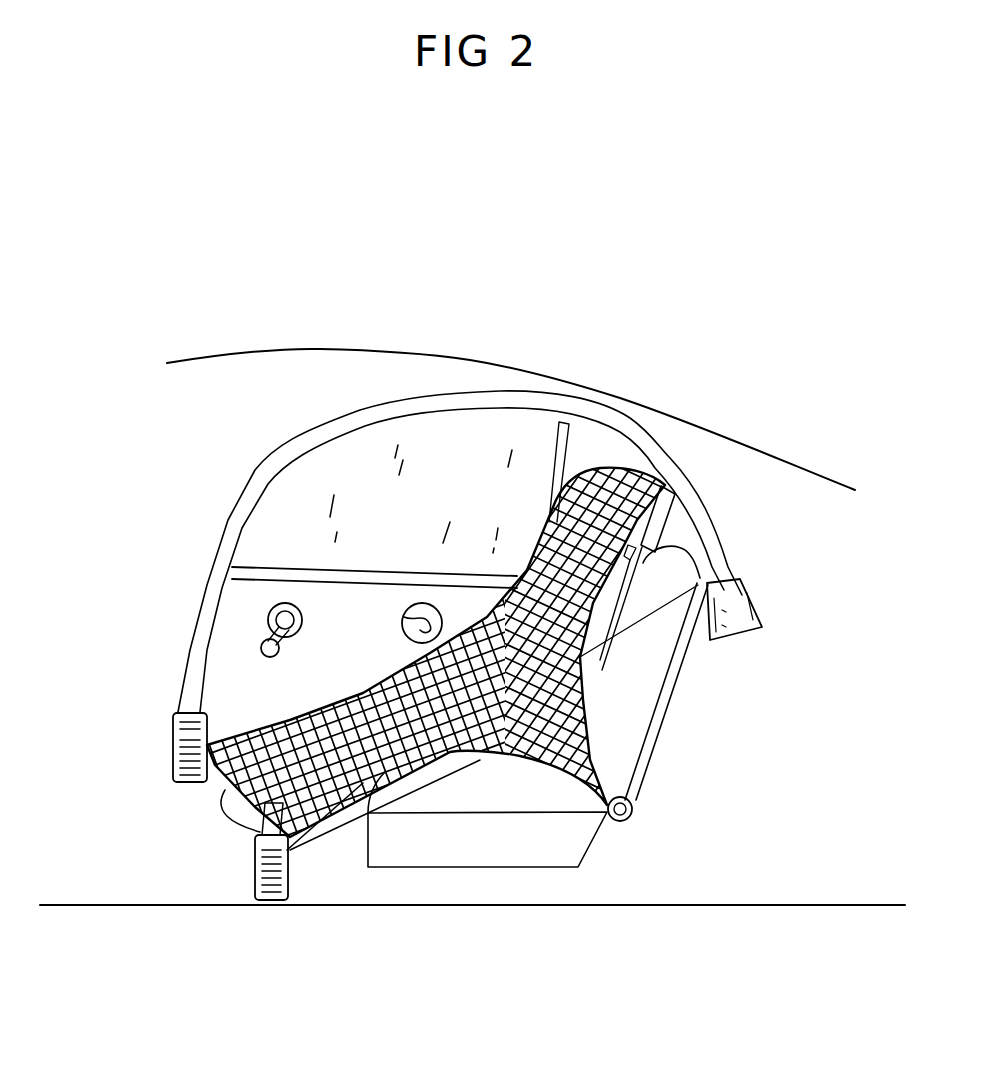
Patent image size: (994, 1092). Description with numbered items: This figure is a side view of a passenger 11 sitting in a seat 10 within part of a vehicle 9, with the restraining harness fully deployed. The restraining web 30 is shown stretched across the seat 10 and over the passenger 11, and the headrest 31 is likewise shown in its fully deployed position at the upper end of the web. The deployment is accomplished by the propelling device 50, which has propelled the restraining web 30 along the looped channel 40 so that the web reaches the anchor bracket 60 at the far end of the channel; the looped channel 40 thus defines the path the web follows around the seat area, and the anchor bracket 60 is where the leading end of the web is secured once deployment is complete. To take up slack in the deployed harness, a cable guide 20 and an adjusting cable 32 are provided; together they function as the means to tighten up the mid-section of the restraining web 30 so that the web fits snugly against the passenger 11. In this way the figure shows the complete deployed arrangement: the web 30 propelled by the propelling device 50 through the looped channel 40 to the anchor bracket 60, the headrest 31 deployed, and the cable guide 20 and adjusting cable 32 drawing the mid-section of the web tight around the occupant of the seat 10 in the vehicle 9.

The vehicle 9 is at (447, 349).
The seat 10 is at (495, 855).
The passenger 11 is at (580, 657).
The cable guide 20 is at (643, 818).
The restraining web 30 is at (546, 528).
The headrest 31 is at (672, 527).
The adjusting cable 32 is at (333, 830).
The looped channel 40 is at (230, 494).
The propelling device 50 is at (753, 648).
The anchor bracket 60 is at (161, 757).